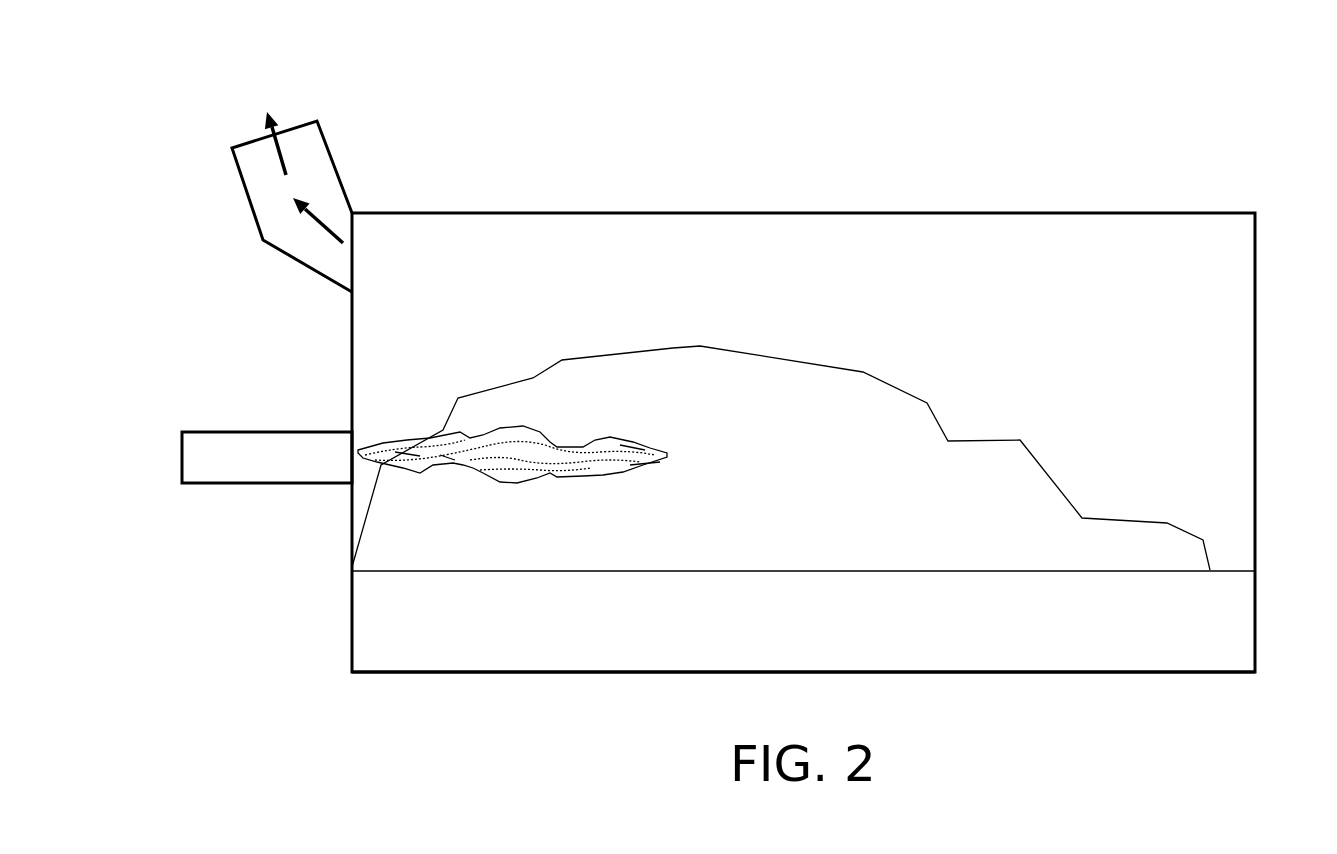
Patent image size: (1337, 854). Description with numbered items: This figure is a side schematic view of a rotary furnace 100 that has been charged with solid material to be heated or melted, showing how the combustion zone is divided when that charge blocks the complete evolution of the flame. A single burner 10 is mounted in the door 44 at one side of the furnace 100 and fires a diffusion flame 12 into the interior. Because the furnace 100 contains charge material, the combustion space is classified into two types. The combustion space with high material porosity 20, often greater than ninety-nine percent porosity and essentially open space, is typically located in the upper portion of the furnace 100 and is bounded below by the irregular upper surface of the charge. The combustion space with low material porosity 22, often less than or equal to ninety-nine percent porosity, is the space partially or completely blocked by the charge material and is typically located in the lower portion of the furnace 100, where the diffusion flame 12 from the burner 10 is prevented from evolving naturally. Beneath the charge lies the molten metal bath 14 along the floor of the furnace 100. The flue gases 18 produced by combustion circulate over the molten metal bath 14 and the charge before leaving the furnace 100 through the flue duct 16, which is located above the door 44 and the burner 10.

The rotary furnace 100 is at (976, 176).
The burner 10 is at (262, 471).
The diffusion flame 12 is at (515, 487).
The molten metal bath 14 is at (772, 635).
The flue duct 16 is at (250, 198).
The flue gases 18 is at (280, 125).
The combustion space with high material porosity 20 is at (716, 281).
The combustion space with low material porosity 22 is at (780, 486).
The door 44 is at (352, 373).